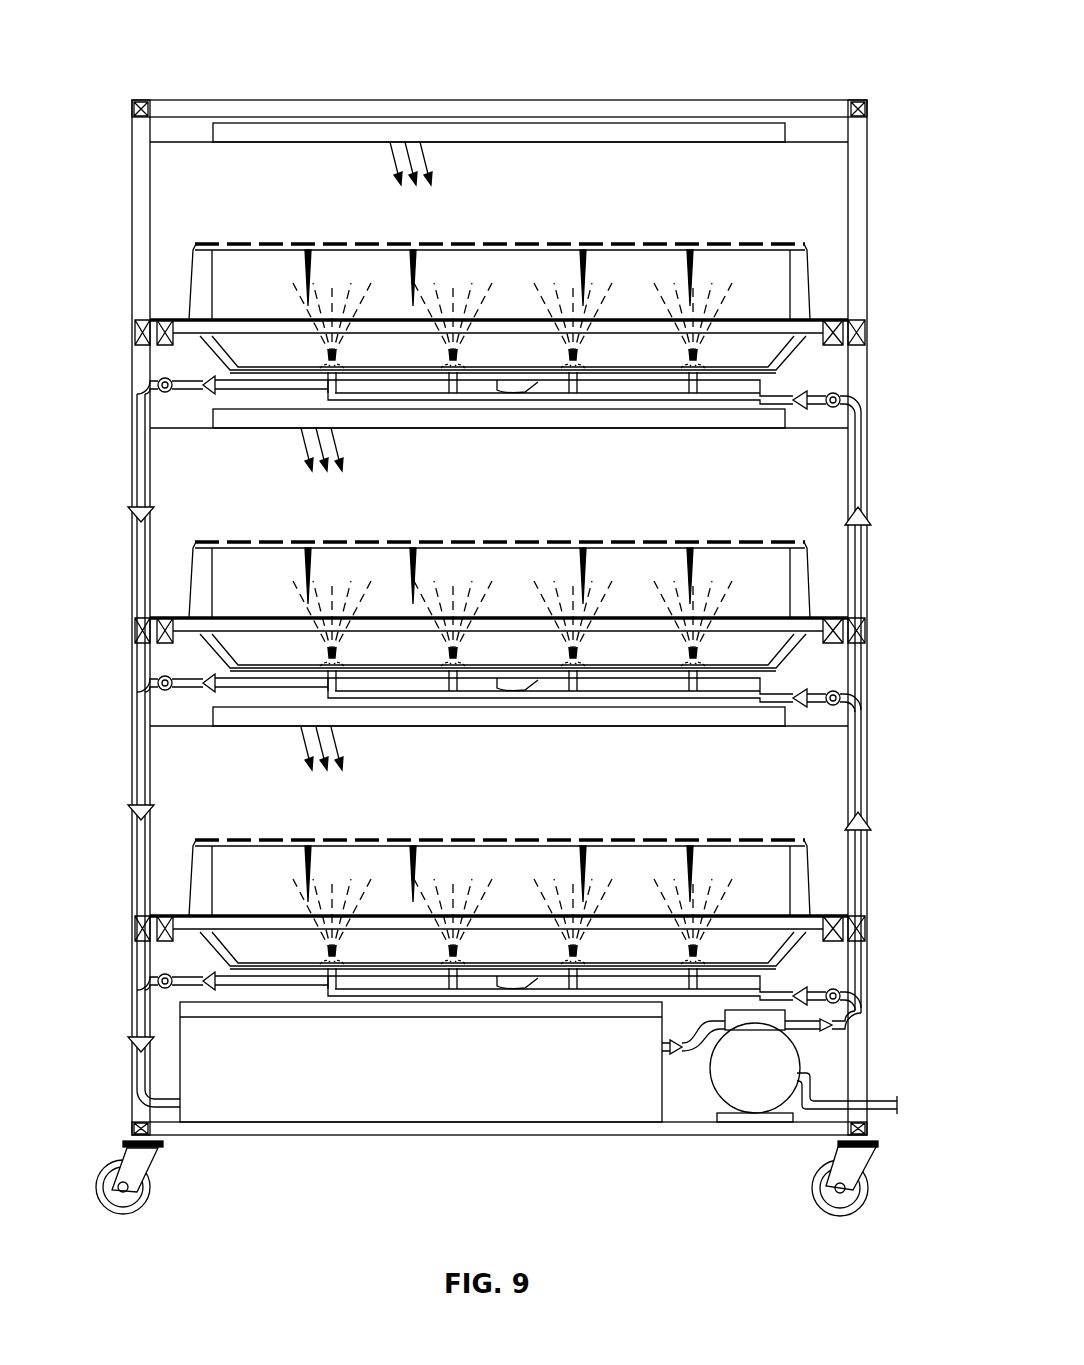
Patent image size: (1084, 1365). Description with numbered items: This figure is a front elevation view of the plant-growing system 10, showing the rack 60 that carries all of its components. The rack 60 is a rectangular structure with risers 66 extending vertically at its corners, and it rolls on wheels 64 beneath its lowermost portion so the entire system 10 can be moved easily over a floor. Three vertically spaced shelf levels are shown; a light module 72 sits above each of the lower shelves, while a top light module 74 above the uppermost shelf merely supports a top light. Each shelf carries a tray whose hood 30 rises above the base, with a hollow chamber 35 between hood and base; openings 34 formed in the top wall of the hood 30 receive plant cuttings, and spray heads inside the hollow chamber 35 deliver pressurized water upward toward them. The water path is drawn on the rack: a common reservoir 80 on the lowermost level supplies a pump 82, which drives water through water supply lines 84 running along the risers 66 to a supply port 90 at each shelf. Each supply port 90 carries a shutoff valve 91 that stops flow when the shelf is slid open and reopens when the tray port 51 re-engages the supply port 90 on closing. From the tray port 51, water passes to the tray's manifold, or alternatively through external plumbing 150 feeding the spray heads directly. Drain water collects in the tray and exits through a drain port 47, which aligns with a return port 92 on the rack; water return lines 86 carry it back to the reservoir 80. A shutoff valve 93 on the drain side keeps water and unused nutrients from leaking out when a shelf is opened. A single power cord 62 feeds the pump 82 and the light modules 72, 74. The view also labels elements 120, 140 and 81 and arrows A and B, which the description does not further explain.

The system 10 is at (144, 32).
The rack 60 is at (800, 32).
The risers 66 is at (135, 1112).
The top light module 74 is at (620, 130).
The light module 72 is at (520, 420).
The growing tier 120 is at (166, 197).
The shelf bracket 140 is at (202, 340).
The hood 30 is at (195, 285).
The openings 34 is at (270, 258).
The hollow chamber 35 is at (499, 280).
The spray region A is at (297, 297).
The light direction B is at (430, 162).
The shutoff valve 93 is at (188, 376).
The external plumbing 150 is at (627, 402).
The tray port 51 is at (805, 408).
The drain port 47 is at (188, 393).
The return port 92 is at (158, 388).
The water return lines 86 is at (137, 428).
The supply port 90 is at (841, 400).
The shutoff valve 91 is at (830, 410).
The water supply lines 84 is at (862, 440).
The reservoir 80 is at (285, 1083).
The pump 82 is at (740, 1083).
The power cord 62 is at (878, 1108).
The base 81 is at (385, 1130).
The wheels 64 is at (152, 1190).